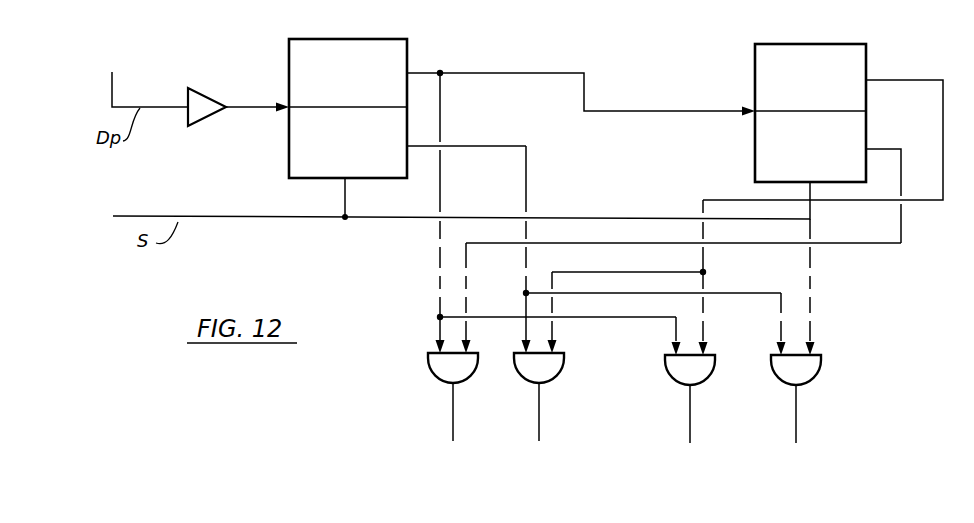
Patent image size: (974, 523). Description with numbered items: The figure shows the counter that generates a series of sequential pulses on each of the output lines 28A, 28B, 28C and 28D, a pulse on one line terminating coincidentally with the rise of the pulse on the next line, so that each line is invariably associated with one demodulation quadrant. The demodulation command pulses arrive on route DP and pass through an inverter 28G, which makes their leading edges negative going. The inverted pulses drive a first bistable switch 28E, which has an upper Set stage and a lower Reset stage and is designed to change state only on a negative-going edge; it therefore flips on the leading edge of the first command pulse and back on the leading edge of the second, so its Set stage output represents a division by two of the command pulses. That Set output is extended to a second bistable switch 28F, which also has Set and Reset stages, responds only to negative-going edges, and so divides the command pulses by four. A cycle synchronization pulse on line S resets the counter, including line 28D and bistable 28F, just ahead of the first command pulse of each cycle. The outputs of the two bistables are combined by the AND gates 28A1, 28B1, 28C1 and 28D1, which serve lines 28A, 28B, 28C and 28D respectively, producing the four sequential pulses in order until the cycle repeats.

The inverter 28G is at (213, 93).
The bistable switch 28E is at (410, 60).
The bistable switch 28F is at (870, 63).
The AND gate 28A1 is at (432, 380).
The AND gate 28B1 is at (534, 385).
The AND gate 28C1 is at (680, 389).
The AND gate 28D1 is at (812, 387).
The line 28A is at (452, 420).
The line 28B is at (539, 422).
The line 28C is at (690, 428).
The line 28D is at (797, 428).